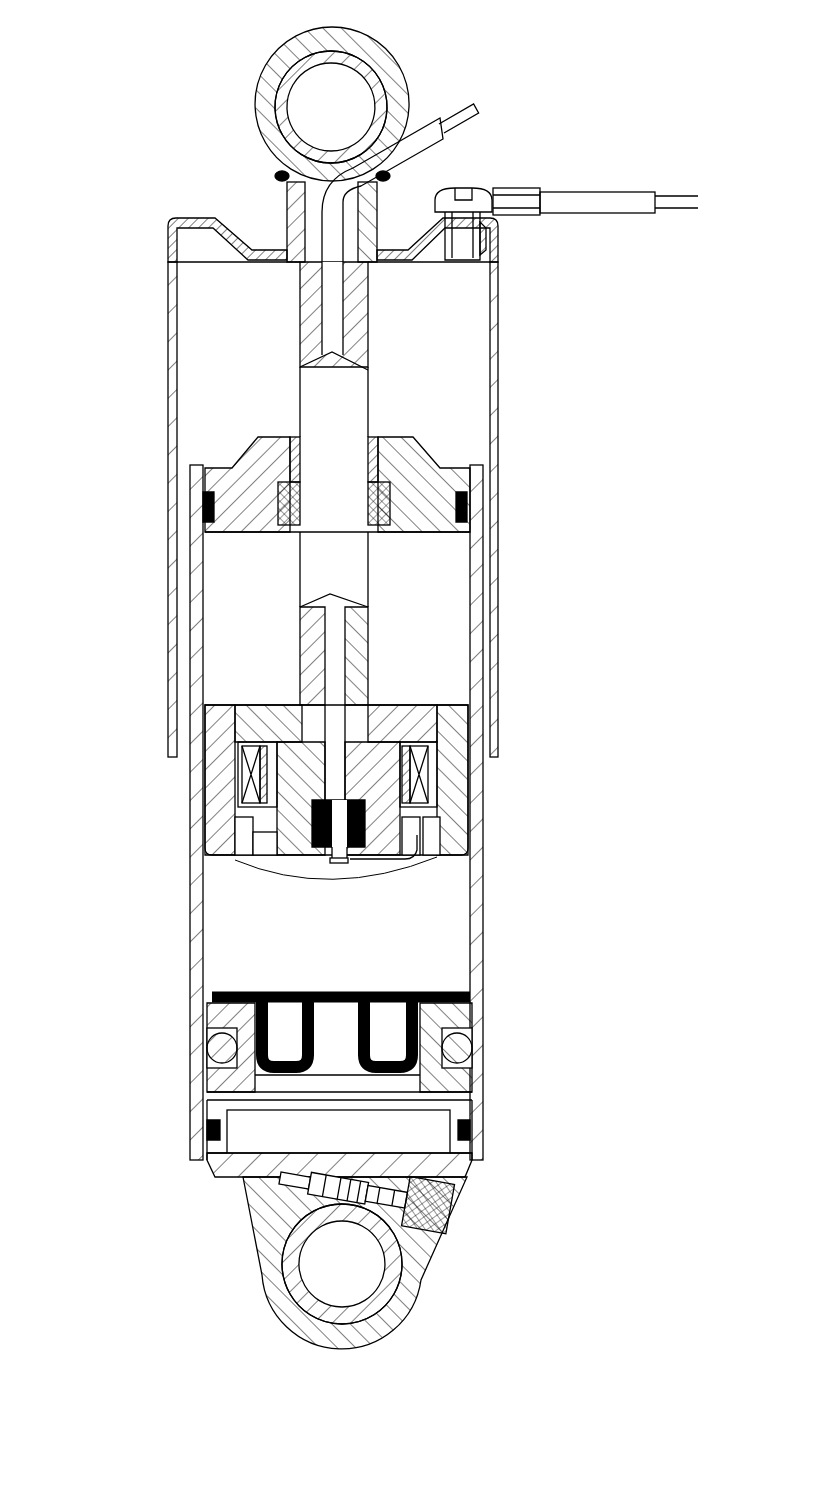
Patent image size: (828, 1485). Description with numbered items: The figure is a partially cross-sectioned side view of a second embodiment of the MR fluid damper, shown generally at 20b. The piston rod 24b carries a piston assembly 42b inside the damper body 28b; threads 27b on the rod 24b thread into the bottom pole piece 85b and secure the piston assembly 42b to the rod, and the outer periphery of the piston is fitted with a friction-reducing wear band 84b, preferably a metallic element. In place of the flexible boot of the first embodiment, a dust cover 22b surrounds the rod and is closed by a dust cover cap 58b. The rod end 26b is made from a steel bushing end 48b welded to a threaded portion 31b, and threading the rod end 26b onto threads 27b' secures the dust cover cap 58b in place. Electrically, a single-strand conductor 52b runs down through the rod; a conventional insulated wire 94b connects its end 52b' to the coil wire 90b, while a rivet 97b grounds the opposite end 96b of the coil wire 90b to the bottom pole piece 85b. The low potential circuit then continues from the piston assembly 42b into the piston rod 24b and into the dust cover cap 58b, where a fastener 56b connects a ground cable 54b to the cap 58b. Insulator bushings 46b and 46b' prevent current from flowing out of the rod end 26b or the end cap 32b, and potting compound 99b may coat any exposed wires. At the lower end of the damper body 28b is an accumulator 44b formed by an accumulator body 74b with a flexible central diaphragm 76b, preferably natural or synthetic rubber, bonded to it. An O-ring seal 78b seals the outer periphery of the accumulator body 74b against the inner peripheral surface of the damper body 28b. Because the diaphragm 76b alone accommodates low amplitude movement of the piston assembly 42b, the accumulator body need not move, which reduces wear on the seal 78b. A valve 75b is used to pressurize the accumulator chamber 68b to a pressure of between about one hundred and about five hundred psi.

The MR fluid damper 20b is at (168, 445).
The dust cover 22b is at (503, 380).
The piston rod 24b is at (334, 483).
The rod end 26b is at (268, 78).
The threads 27b is at (211, 737).
The threads 27b' is at (458, 210).
The damper body 28b is at (486, 945).
The threaded portion 31b is at (285, 206).
The end cap 32b is at (250, 1240).
The piston assembly 42b is at (206, 835).
The accumulator 44b is at (206, 1018).
The insulator bushing 46b is at (397, 100).
The insulator bushing 46b' is at (278, 1271).
The steel bushing end 48b is at (335, 36).
The single-strand conductor 52b is at (461, 218).
The end of single-strand conductor 52b' is at (350, 883).
The ground cable 54b is at (600, 200).
The fastener 56b is at (520, 188).
The dust cover cap 58b is at (176, 220).
The accumulator chamber 68b is at (339, 1138).
The accumulator body 74b is at (470, 1010).
The valve 75b is at (455, 1208).
The flexible diaphragm 76b is at (250, 997).
The O-ring seal 78b is at (470, 1050).
The wear band 84b is at (470, 780).
The bottom pole piece 85b is at (380, 748).
The coil wire 90b is at (245, 770).
The insulated wire 94b is at (366, 858).
The opposite end of coil wire 96b is at (292, 850).
The rivet 97b is at (266, 852).
The potting compound 99b is at (420, 855).